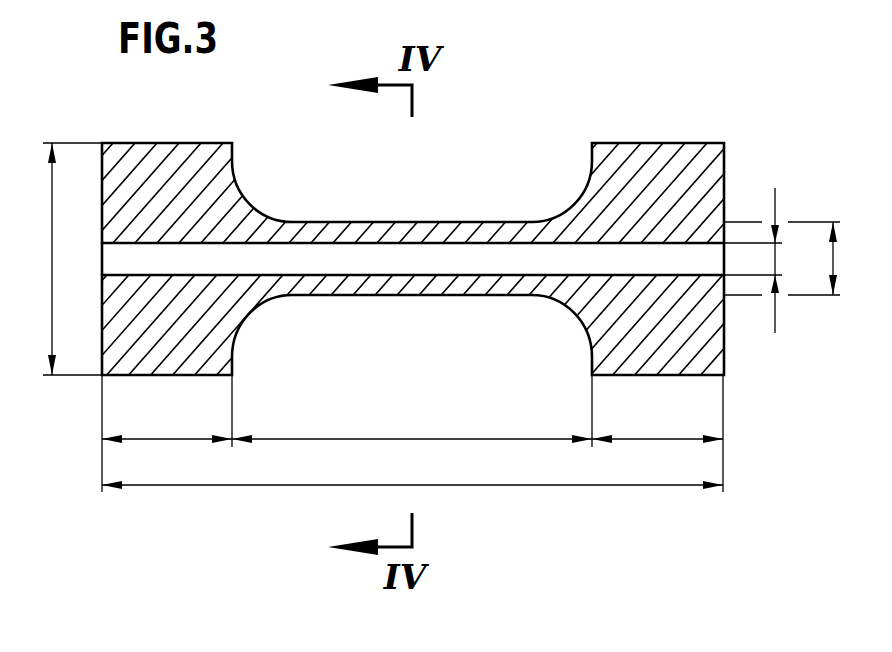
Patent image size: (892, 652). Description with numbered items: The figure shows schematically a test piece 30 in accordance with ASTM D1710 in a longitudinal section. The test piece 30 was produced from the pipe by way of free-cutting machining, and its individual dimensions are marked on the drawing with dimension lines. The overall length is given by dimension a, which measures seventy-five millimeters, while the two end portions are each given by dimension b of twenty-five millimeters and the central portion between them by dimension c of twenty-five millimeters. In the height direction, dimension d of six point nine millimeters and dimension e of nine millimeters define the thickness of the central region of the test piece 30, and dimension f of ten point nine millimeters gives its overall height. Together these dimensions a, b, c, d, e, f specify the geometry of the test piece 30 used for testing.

The test piece 30 is at (446, 206).
The dimension a is at (412, 470).
The dimension b is at (412, 433).
The dimension c is at (412, 423).
The dimension d is at (782, 258).
The dimension e is at (753, 260).
The dimension f is at (65, 259).